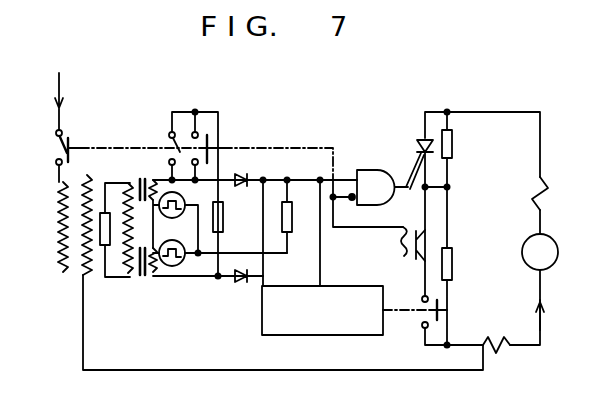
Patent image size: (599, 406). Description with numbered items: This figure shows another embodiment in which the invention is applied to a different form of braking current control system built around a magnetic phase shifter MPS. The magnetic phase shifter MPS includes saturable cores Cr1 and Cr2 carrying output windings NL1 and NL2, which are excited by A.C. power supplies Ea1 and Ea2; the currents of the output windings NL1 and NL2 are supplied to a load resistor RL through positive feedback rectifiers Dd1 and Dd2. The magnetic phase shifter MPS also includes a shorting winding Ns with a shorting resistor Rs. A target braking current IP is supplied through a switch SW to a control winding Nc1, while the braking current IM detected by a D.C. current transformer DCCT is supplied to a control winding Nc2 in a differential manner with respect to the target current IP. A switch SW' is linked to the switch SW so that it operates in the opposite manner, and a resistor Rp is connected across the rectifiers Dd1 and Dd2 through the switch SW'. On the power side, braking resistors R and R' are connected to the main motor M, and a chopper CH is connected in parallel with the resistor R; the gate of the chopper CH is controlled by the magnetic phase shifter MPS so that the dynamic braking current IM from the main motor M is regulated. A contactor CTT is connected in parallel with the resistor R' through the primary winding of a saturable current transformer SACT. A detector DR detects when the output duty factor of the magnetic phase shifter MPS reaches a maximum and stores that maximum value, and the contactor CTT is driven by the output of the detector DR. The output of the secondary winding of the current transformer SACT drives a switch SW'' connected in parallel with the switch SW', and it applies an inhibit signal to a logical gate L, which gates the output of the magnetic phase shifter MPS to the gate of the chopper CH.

The target braking current IP is at (67, 100).
The switch SW is at (43, 141).
The switch SW' is at (156, 125).
The switch SW'' is at (220, 124).
The shorting resistor Rs is at (103, 188).
The control winding Nc1 is at (58, 231).
The control winding Nc2 is at (81, 244).
The shorting winding Ns is at (121, 256).
The saturable core Cr1 is at (140, 181).
The saturable core Cr2 is at (143, 276).
The output winding NL1 is at (152, 178).
The output winding NL2 is at (159, 279).
The A.C. power supply Ea1 is at (167, 219).
The A.C. power supply Ea2 is at (171, 268).
The positive feedback rectifier Dd1 is at (234, 178).
The positive feedback rectifier Dd2 is at (242, 281).
The resistor Rp is at (224, 216).
The load resistor RL is at (292, 222).
The logical gate L is at (360, 172).
The chopper CH is at (418, 144).
The braking resistor R is at (460, 144).
The braking resistor R' is at (461, 257).
The saturable current transformer SACT is at (406, 262).
The detector DR is at (291, 336).
The contactor CTT is at (452, 311).
The main motor M is at (553, 266).
The braking current IM is at (551, 322).
The D.C. current transformer DCCT is at (491, 355).
The magnetic phase shifter MPS is at (165, 366).